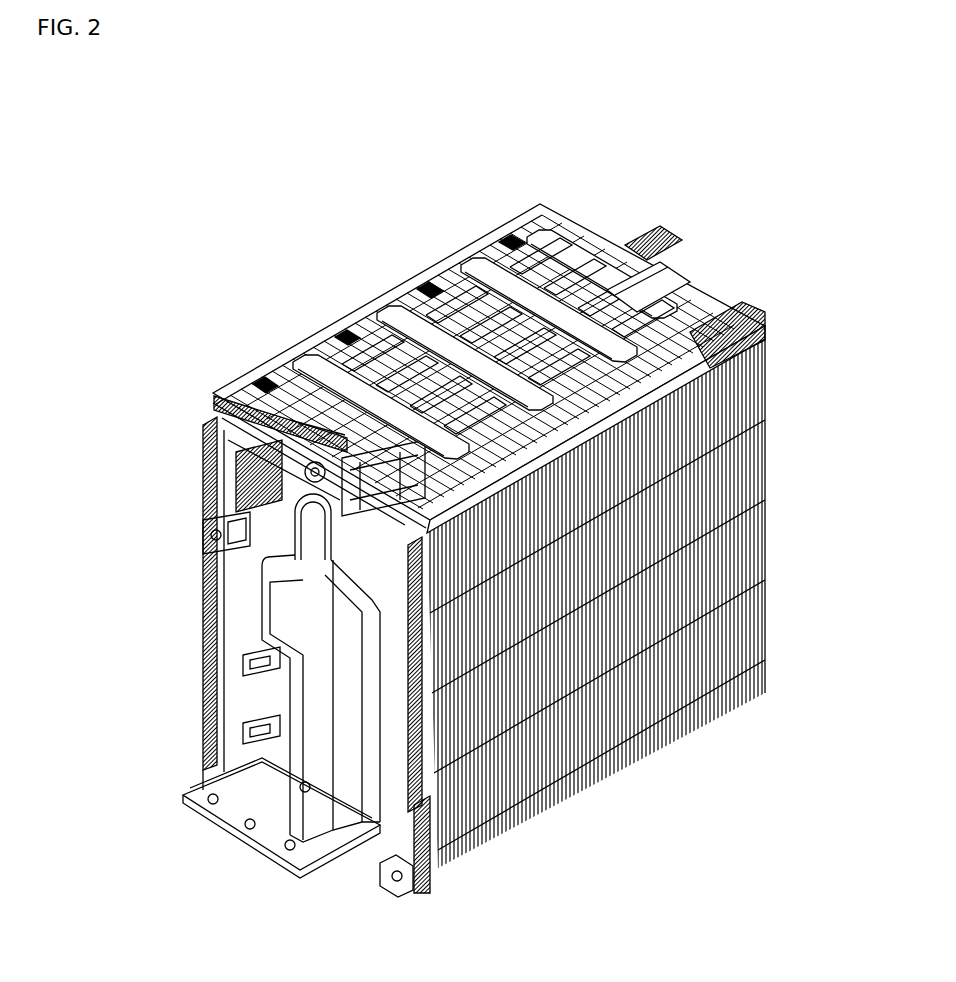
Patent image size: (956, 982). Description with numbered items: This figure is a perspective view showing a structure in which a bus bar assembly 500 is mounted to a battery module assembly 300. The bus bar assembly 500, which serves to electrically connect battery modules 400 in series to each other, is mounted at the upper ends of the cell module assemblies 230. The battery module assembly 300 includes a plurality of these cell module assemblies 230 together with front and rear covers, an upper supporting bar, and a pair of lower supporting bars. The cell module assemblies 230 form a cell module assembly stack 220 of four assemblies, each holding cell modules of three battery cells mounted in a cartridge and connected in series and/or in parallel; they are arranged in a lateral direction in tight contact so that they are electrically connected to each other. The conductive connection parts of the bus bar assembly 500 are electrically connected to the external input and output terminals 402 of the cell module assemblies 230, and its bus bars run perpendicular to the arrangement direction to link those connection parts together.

The battery module 400 is at (141, 308).
The cell module assembly stack 220 is at (538, 207).
The cell module assembly 230 is at (570, 797).
The battery module assembly 300 is at (198, 566).
The external input and output terminal 402 is at (742, 342).
The bus bar assembly 500 is at (630, 236).